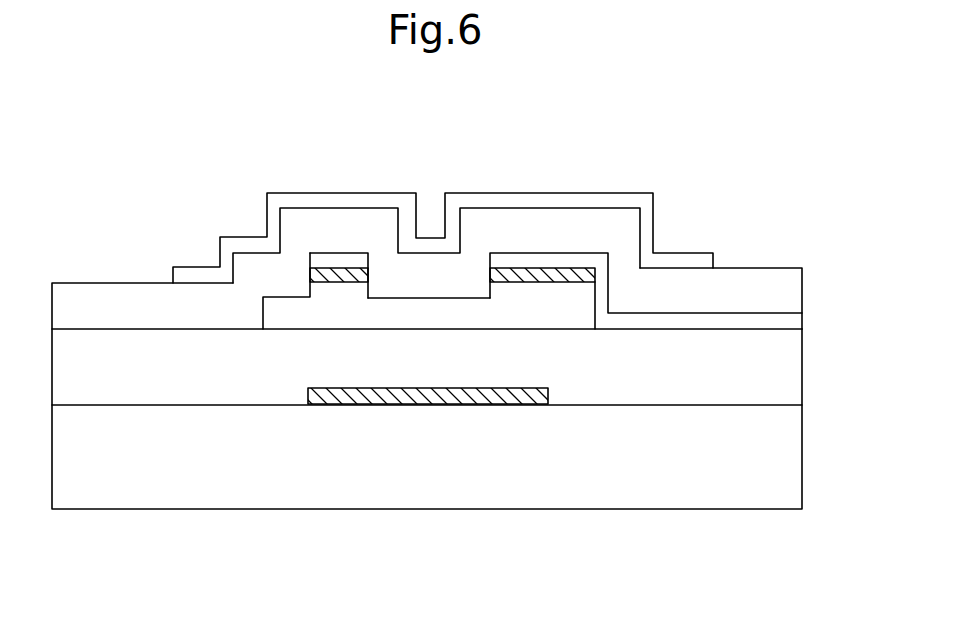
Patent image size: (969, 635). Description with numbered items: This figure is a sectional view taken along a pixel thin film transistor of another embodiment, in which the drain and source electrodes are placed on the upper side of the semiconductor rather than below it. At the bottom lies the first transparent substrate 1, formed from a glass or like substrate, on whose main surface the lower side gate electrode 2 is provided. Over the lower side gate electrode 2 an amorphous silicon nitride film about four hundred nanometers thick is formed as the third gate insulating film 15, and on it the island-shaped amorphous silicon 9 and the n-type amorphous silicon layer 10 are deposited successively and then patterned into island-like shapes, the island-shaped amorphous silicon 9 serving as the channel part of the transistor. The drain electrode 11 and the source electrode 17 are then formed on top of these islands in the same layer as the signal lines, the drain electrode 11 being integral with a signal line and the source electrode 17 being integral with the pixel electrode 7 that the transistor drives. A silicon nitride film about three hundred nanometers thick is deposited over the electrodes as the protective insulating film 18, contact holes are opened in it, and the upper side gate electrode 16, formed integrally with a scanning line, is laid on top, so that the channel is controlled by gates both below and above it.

The first transparent substrate 1 is at (802, 458).
The lower side gate electrode 2 is at (405, 403).
The pixel electrode 7 is at (802, 323).
The island-shaped amorphous silicon 9 is at (558, 311).
The n-type amorphous silicon layer 10 is at (310, 277).
The drain electrode 11 is at (337, 253).
The third gate insulating film 15 is at (797, 367).
The upper side gate electrode 16 is at (588, 193).
The source electrode 17 is at (530, 253).
The protective insulating film 18 is at (758, 268).